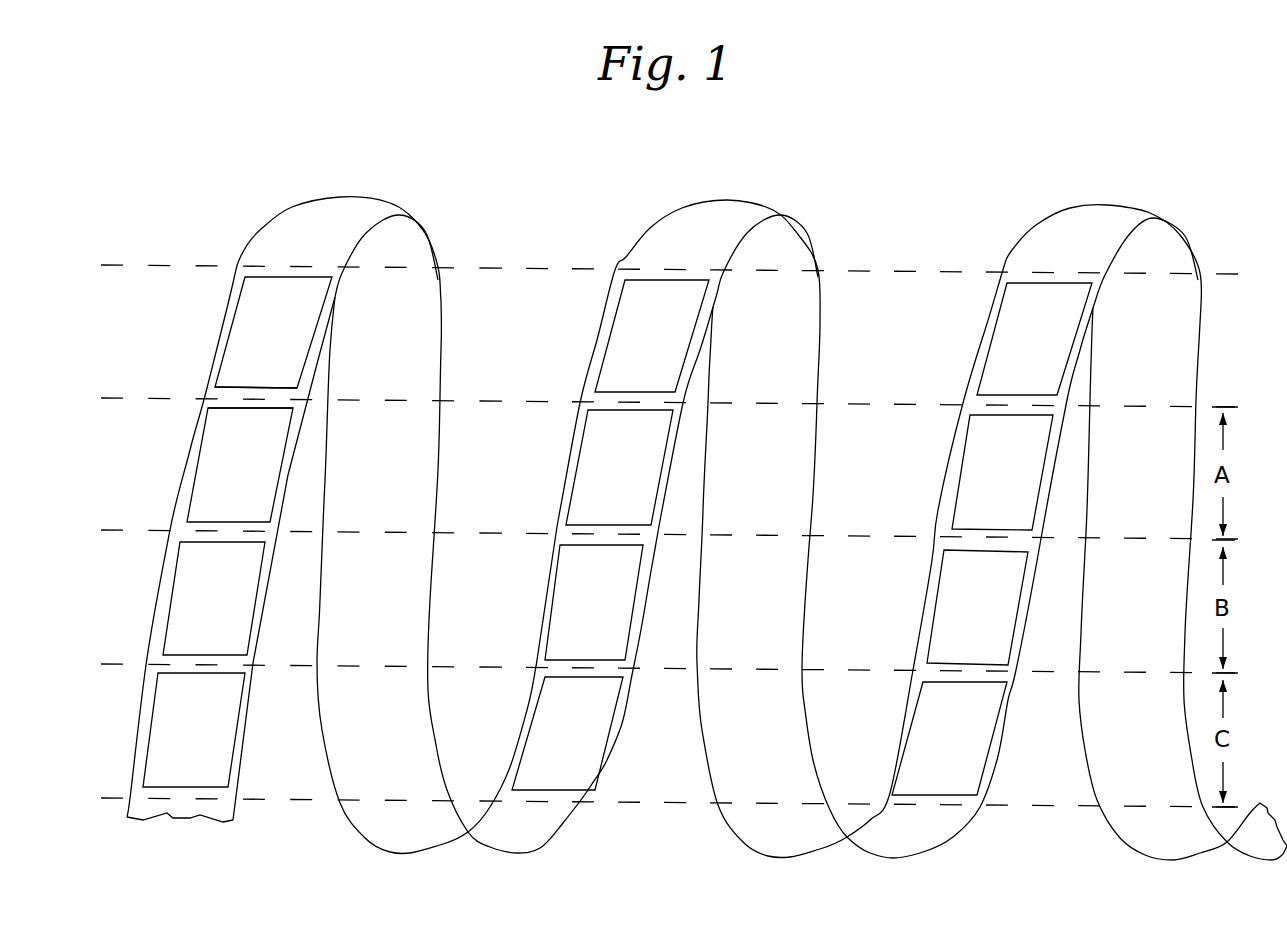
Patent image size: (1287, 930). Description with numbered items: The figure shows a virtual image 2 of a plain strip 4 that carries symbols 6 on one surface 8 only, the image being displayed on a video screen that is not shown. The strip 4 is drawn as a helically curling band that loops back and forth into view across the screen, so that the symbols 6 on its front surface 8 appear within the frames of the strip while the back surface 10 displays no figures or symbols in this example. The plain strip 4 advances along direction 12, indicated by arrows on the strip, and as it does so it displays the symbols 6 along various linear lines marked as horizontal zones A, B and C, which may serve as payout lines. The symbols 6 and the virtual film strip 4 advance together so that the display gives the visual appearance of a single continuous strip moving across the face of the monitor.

The virtual image 2 is at (692, 484).
The plain strip 4 is at (435, 513).
The symbols 6 is at (237, 333).
The one surface 8 is at (205, 384).
The back surface 10 is at (445, 346).
The direction 12 is at (178, 433).